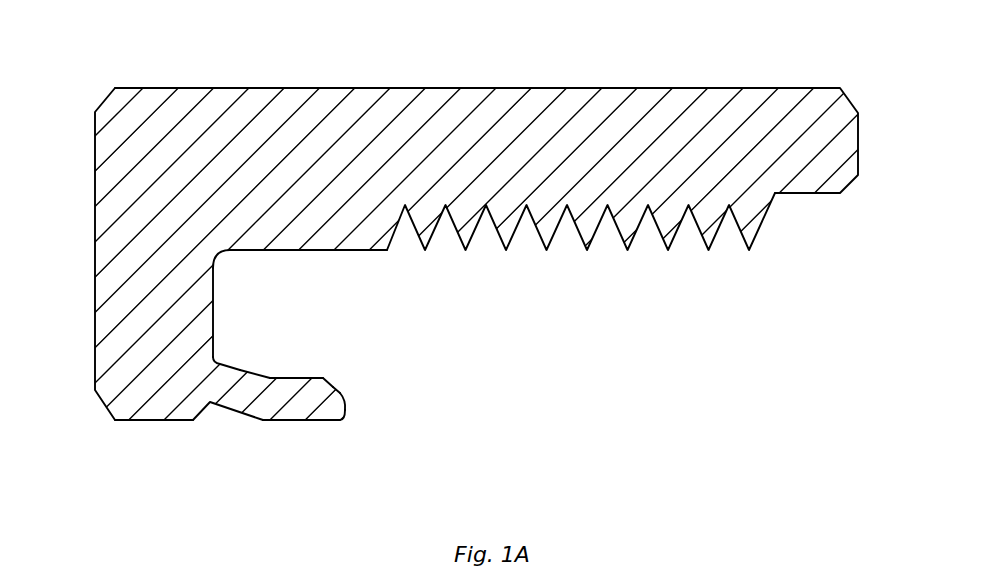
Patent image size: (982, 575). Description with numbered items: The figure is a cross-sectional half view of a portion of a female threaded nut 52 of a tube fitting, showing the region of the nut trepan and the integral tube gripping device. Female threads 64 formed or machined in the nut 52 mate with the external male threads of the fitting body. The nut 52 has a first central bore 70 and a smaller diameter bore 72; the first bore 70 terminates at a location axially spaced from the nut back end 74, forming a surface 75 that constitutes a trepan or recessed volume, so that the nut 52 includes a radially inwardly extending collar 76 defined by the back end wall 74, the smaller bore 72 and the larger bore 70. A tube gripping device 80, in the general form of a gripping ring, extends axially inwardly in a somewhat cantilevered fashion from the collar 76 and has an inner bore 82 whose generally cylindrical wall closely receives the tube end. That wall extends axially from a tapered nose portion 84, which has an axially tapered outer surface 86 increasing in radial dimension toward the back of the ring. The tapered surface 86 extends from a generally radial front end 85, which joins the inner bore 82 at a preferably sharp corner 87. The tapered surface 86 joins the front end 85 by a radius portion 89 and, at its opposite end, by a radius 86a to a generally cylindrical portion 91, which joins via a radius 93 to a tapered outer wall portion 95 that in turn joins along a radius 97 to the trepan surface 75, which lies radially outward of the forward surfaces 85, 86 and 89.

The female threaded nut 52 is at (232, 72).
The female threads 64 is at (652, 222).
The first central bore 70 is at (362, 252).
The smaller diameter bore 72 is at (140, 421).
The nut back end 74 is at (95, 193).
The surface 75 is at (216, 293).
The collar 76 is at (155, 293).
The tube gripping device 80 is at (268, 433).
The inner bore 82 is at (297, 422).
The nose portion 84 is at (332, 410).
The front end 85 is at (347, 408).
The tapered outer surface 86 is at (337, 380).
The radius 86a is at (325, 378).
The sharp corner 87 is at (345, 418).
The radius portion 89 is at (345, 393).
The generally cylindrical portion 91 is at (295, 377).
The radius 93 is at (273, 378).
The tapered outer wall portion 95 is at (262, 368).
The radius 97 is at (225, 347).